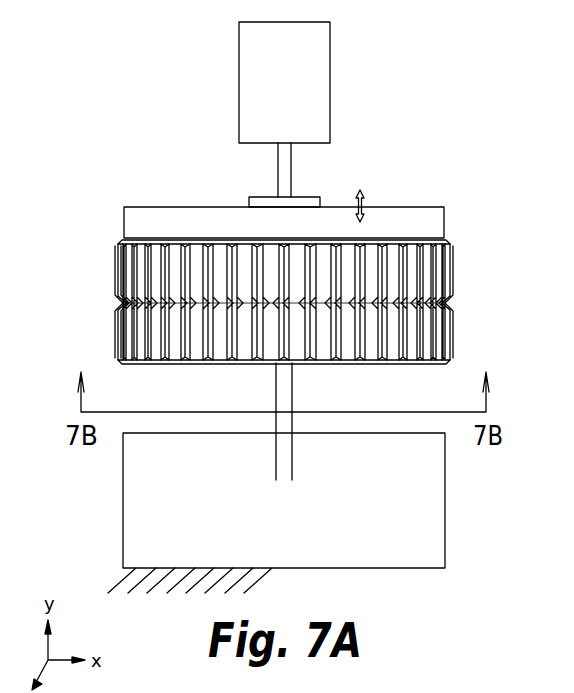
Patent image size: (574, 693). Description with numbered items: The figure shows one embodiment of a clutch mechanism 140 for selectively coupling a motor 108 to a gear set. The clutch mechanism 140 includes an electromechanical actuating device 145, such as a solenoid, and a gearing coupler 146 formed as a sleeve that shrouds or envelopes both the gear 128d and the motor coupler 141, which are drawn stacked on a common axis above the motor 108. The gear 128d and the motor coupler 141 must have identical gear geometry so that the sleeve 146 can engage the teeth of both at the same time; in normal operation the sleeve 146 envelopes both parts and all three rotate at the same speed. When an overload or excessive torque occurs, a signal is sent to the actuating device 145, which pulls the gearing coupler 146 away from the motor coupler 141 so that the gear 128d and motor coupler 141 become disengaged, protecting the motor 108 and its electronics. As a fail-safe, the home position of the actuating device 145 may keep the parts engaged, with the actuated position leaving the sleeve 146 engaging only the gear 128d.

The clutch mechanism 140 is at (100, 22).
The electromechanical actuating device 145 is at (297, 90).
The gearing coupler 146 is at (293, 235).
The gear 128d is at (397, 250).
The motor coupler 141 is at (314, 258).
The motor 108 is at (362, 518).